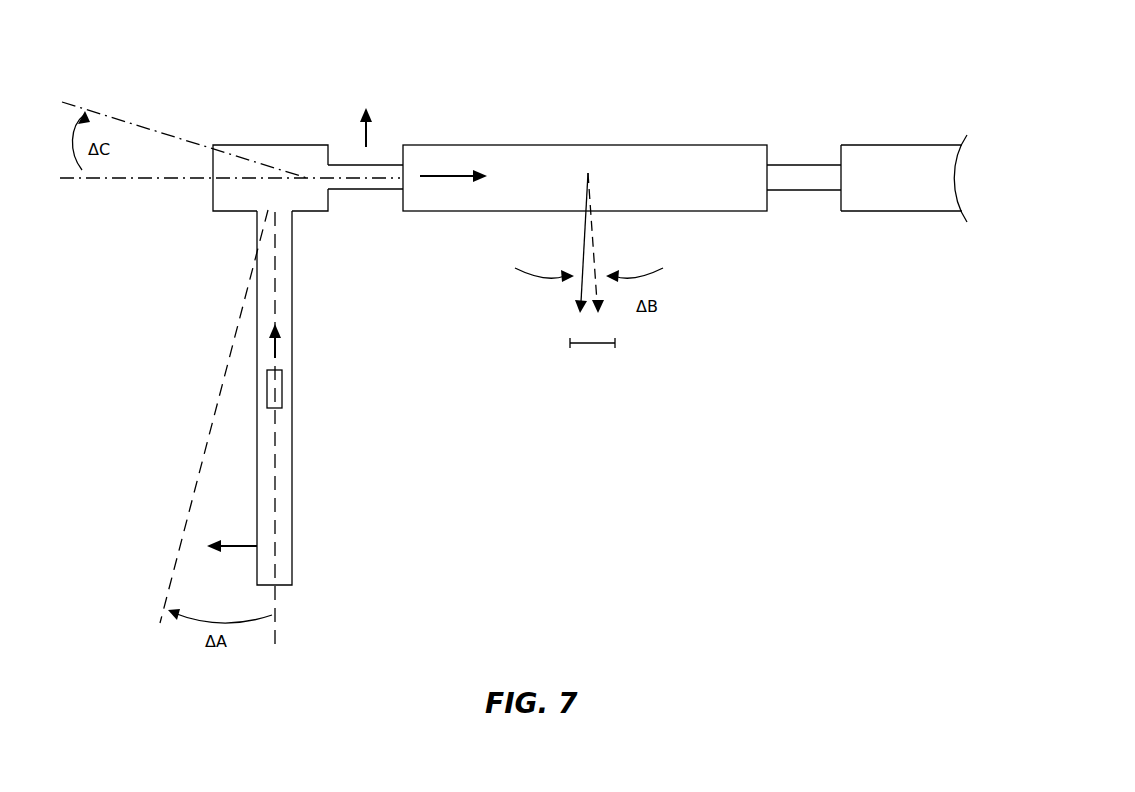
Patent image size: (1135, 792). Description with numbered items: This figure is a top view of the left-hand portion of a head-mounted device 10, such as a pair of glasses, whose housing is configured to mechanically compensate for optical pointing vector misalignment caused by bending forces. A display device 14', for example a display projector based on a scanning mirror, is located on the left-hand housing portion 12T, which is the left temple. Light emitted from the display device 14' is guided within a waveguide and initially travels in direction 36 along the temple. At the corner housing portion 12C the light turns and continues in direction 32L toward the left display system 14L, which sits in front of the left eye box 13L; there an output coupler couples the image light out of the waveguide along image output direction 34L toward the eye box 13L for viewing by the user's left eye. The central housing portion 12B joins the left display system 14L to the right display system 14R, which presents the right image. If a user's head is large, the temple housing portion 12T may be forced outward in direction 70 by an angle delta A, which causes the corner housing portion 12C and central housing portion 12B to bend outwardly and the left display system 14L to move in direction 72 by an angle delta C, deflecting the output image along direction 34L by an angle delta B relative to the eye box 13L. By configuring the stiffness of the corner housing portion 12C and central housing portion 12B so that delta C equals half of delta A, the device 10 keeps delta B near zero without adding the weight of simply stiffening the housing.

The head-mounted device 10 is at (822, 75).
The corner housing portion 12C is at (276, 144).
The left display system 14L is at (715, 160).
The central housing portion 12B is at (809, 175).
The right display system 14R is at (904, 200).
The housing portion 12T is at (282, 470).
The display device 14' is at (307, 389).
The direction 36 is at (282, 345).
The direction 70 is at (234, 545).
The direction 72 is at (370, 128).
The direction 32L is at (455, 180).
The image output direction 34L is at (598, 232).
The left eye box 13L is at (620, 340).